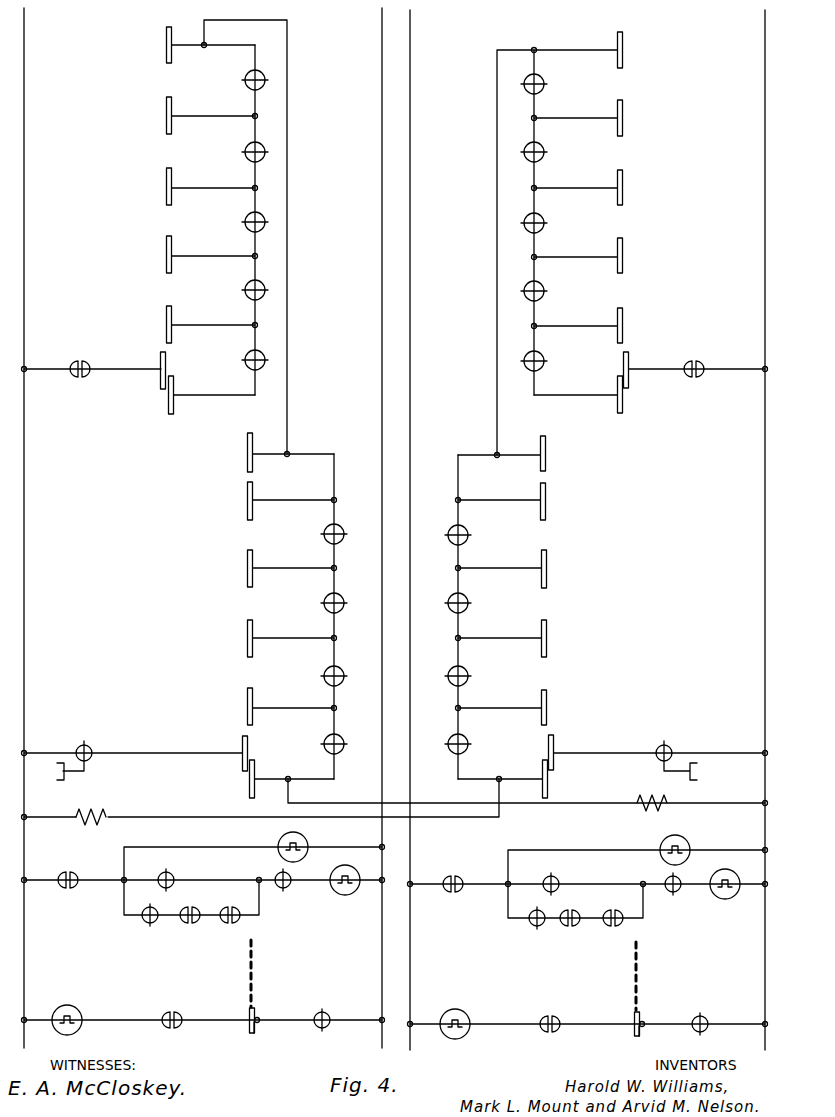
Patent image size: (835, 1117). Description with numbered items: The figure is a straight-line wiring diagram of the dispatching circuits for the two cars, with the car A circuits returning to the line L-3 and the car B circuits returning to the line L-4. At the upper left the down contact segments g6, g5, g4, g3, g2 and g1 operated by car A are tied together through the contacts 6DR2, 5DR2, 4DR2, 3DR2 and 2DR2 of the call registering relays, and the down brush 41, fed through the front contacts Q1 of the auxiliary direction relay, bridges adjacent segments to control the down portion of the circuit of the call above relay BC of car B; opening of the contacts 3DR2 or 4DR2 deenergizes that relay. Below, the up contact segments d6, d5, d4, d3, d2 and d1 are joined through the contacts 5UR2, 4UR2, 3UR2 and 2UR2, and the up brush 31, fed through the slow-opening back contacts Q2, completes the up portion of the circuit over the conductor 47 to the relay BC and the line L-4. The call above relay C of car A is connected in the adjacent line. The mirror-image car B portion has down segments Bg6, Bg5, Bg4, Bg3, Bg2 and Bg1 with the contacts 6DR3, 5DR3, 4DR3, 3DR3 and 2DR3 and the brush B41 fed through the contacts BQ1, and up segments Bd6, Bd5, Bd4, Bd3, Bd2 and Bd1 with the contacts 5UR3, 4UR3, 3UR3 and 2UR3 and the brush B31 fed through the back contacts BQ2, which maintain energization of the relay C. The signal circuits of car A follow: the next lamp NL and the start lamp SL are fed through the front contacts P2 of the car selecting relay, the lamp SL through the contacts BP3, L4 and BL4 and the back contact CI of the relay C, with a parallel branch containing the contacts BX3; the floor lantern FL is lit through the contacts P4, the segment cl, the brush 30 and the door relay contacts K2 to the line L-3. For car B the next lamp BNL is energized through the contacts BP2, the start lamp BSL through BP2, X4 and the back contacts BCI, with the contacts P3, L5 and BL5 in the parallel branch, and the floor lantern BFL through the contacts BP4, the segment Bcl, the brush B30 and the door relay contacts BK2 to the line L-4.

The negative supply line L-3 is at (380, 30).
The negative supply line L-4 is at (763, 34).
The down contact segment g6 is at (165, 45).
The down contact segment g5 is at (165, 116).
The down contact segment g4 is at (165, 188).
The down contact segment g3 is at (165, 256).
The down contact segment g2 is at (165, 325).
The down contact segment g1 is at (168, 408).
The down relay 6DR2 is at (242, 82).
The down relay 5DR2 is at (242, 154).
The contacts of relay 4DR 4DR2 is at (242, 224).
The contacts of relay 3DR 3DR2 is at (242, 292).
The down relay 2DR2 is at (242, 362).
The front contacts of auxiliary direction relay Q Q1 is at (94, 361).
The down brush 41 is at (160, 358).
The up contact segment d6 is at (246, 455).
The up contact segment d5 is at (246, 500).
The up contact segment d4 is at (246, 568).
The up contact segment d3 is at (246, 638).
The up contact segment d2 is at (246, 708).
The up contact segment d1 is at (248, 781).
The up relay 5UR2 is at (322, 537).
The up relay 4UR2 is at (322, 606).
The up relay 3UR2 is at (322, 679).
The up relay 2UR2 is at (322, 747).
The back contacts of auxiliary direction relay Q Q2 is at (92, 746).
The up brush 31 is at (240, 740).
The circuit conductor 47 is at (354, 810).
The call above relay C is at (100, 806).
The "next" lamp NL is at (303, 838).
The front contacts of car selecting relay P P2 is at (82, 864).
The contact BX3 is at (174, 866).
The back contact of call above relay C CI is at (276, 874).
The "start" lamp SL is at (340, 868).
The back contacts of car selecting relay BP BP3 is at (146, 922).
The contacts of lower terminal relay L L4 is at (194, 906).
The contacts of lower terminal relay BL BL4 is at (244, 922).
The floor lantern FL is at (82, 1006).
The front contacts of car selecting relay P P4 is at (186, 1008).
The up brush 30 is at (258, 1016).
The up contact segment cl is at (256, 1032).
The contacts of door relay K K2 is at (326, 1010).
The down contact segment of car B Bg6 is at (623, 50).
The down contact segment of car B Bg5 is at (623, 118).
The down contact segment of car B Bg4 is at (623, 188).
The down contact segment of car B Bg3 is at (623, 257).
The down contact segment of car B Bg2 is at (623, 326).
The down contact segment of car B Bg1 is at (623, 404).
The down relay 6DR3 is at (545, 88).
The down relay 5DR3 is at (545, 156).
The contacts of relay 4DR 4DR3 is at (545, 227).
The contacts of relay 3DR 3DR3 is at (545, 295).
The down relay 2DR3 is at (545, 365).
The down brush of car B B41 is at (630, 358).
The front contacts of auxiliary direction relay BQ BQ1 is at (702, 362).
The up contact segment of car B Bd6 is at (546, 452).
The up contact segment of car B Bd5 is at (546, 500).
The up contact segment of car B Bd4 is at (547, 565).
The up contact segment of car B Bd3 is at (547, 638).
The up contact segment of car B Bd2 is at (547, 708).
The up contact segment of car B Bd1 is at (548, 784).
The up relay 5UR3 is at (469, 539).
The up relay 4UR3 is at (469, 607).
The up relay 3UR3 is at (469, 680).
The up relay 2UR3 is at (469, 748).
The up brush of car B B31 is at (554, 742).
The back contacts of auxiliary direction relay BQ BQ2 is at (672, 746).
The call above relay BC is at (664, 804).
The "next" lamp BNL is at (688, 842).
The front contacts of car selecting relay BP BP2 is at (476, 864).
The contacts of up preference relay X X4 is at (548, 876).
The back contacts of call above relay BC BCI is at (666, 878).
The "start" lamp BSL is at (724, 900).
The back contacts of car selecting relay P P3 is at (532, 926).
The contact L5 is at (574, 910).
The contact BL5 is at (608, 926).
The floor lantern BFL is at (476, 1010).
The front contacts of car selecting relay BP BP4 is at (548, 1012).
The up brush of car B B30 is at (642, 1020).
The up contact segment of car B Bcl is at (634, 1034).
The contacts of door relay BK BK2 is at (704, 1014).